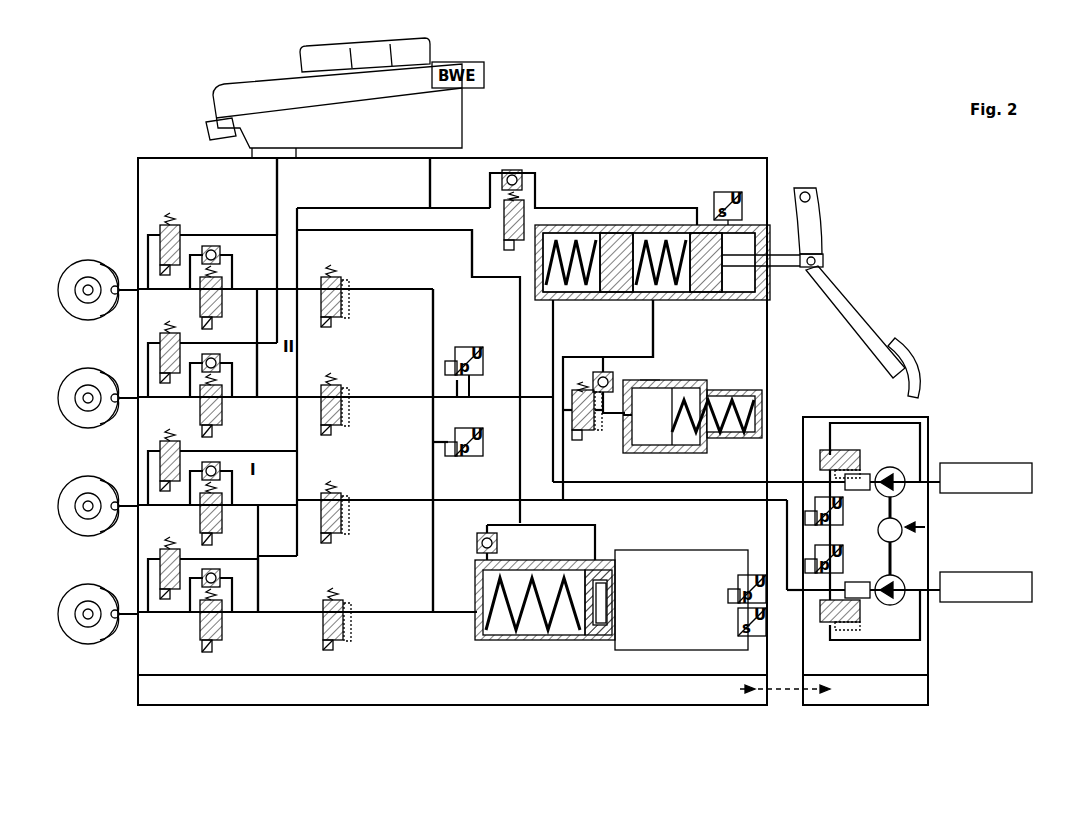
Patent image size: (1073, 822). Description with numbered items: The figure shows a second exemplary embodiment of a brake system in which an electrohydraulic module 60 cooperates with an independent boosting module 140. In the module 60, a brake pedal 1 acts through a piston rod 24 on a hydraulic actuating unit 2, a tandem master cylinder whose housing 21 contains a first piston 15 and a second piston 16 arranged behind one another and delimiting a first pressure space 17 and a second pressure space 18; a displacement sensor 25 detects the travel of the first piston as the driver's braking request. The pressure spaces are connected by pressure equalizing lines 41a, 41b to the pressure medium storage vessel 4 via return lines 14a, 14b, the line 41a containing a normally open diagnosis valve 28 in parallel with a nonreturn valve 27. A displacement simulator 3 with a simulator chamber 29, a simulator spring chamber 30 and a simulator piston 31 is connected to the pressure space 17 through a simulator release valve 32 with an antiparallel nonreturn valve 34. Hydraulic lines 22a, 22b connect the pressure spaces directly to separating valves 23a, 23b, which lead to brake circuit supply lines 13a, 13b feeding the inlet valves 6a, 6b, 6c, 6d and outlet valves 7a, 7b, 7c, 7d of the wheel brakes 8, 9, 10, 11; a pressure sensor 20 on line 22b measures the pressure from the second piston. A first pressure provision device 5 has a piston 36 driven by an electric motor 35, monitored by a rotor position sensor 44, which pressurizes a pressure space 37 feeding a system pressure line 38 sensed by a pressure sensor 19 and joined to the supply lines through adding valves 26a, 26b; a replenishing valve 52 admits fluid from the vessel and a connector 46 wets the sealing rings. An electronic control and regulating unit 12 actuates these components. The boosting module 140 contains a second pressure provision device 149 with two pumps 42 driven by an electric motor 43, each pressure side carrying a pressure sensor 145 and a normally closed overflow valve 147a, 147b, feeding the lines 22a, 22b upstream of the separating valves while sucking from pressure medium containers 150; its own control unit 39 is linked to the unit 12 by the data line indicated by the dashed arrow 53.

The brake pedal 1 is at (856, 300).
The hydraulic actuating unit 2 is at (652, 252).
The displacement simulator 3 is at (719, 372).
The pressure medium storage vessel 4 is at (250, 92).
The first electrically controllable pressure provision device 5 is at (709, 548).
The inlet valve 6a is at (200, 296).
The inlet valve 6b is at (200, 404).
The inlet valve 6c is at (200, 512).
The inlet valve 6d is at (200, 620).
The outlet valve 7a is at (162, 249).
The outlet valve 7b is at (162, 357).
The outlet valve 7c is at (162, 465).
The outlet valve 7d is at (162, 573).
The wheel brake 8 is at (108, 306).
The wheel brake 9 is at (108, 414).
The wheel brake 10 is at (108, 522).
The wheel brake 11 is at (108, 630).
The electronic control and regulating unit 12 is at (700, 698).
The brake circuit supply line 13a is at (260, 580).
The brake circuit supply line 13b is at (257, 372).
The return line 14a is at (432, 170).
The return line 14b is at (279, 168).
The first piston 15 is at (712, 298).
The second piston 16 is at (612, 298).
The first pressure space 17 is at (672, 298).
The second pressure space 18 is at (562, 240).
The pressure sensor 19 is at (462, 458).
The pressure sensor 20 is at (463, 345).
The housing 21 is at (644, 162).
The hydraulic line 22a is at (640, 352).
The hydraulic line 22b is at (545, 345).
The separating valve 23a is at (338, 520).
The separating valve 23b is at (340, 410).
The piston rod 24 is at (785, 270).
The displacement sensor 25 is at (745, 193).
The adding valve 26a is at (322, 625).
The adding valve 26b is at (342, 282).
The nonreturn valve 27 is at (512, 168).
The diagnosis valve 28 is at (504, 232).
The simulator chamber 29 is at (626, 442).
The simulator spring chamber 30 is at (742, 398).
The simulator piston 31 is at (650, 380).
The simulator release valve 32 is at (572, 410).
The nonreturn valve 34 is at (593, 378).
The electric motor 35 is at (680, 560).
The piston 36 is at (588, 636).
The pressure space 37 is at (482, 626).
The system pressure line 38 is at (430, 312).
The electronic control and regulating unit 39 is at (925, 690).
The pressure equalizing line 41a is at (607, 206).
The pressure equalizing line 41b is at (470, 250).
The pump 42 is at (905, 490).
The electric motor 43 is at (903, 535).
The rotor position sensor 44 is at (752, 574).
The connector 46 is at (607, 572).
The replenishing valve 52 is at (498, 543).
The dashed arrow 53 is at (784, 680).
The electrohydraulic module 60 is at (721, 152).
The boosting module 140 is at (928, 445).
The pressure sensor 145 is at (843, 520).
The overflow valve 147a is at (860, 622).
The overflow valve 147b is at (828, 450).
The second electronically controllable pressure provision device 149 is at (925, 527).
The pressure medium container 150 is at (1010, 462).